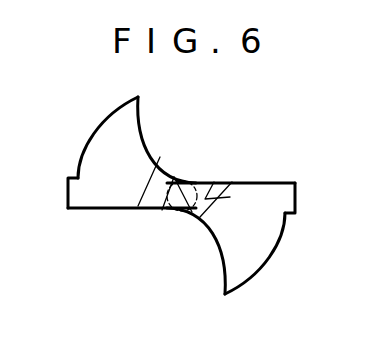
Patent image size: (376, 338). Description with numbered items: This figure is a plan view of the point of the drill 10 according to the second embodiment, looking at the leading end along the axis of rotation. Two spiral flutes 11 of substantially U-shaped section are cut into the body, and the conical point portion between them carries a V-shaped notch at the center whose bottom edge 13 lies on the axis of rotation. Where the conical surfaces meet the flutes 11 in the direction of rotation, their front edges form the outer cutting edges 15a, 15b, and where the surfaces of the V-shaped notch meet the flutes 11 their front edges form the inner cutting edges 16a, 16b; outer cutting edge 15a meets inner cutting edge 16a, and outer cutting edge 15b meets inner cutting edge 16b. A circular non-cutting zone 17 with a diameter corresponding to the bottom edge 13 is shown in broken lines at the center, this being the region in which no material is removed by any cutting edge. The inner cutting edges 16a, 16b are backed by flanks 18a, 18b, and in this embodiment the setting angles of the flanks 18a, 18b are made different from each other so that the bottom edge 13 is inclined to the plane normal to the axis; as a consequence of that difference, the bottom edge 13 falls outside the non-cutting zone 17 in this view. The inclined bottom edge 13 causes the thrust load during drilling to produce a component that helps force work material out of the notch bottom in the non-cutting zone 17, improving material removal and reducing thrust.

The drill 10 is at (74, 144).
The spiral flutes 11 is at (151, 138).
The bottom edge of the V-shaped notch 13 is at (162, 210).
The outer cutting edge 15a is at (266, 181).
The outer cutting edge 15b is at (93, 209).
The inner cutting edge 16a is at (194, 182).
The inner cutting edge 16b is at (140, 210).
The non-cutting zone 17 is at (196, 212).
The flank 18a is at (232, 182).
The flank 18b is at (160, 157).